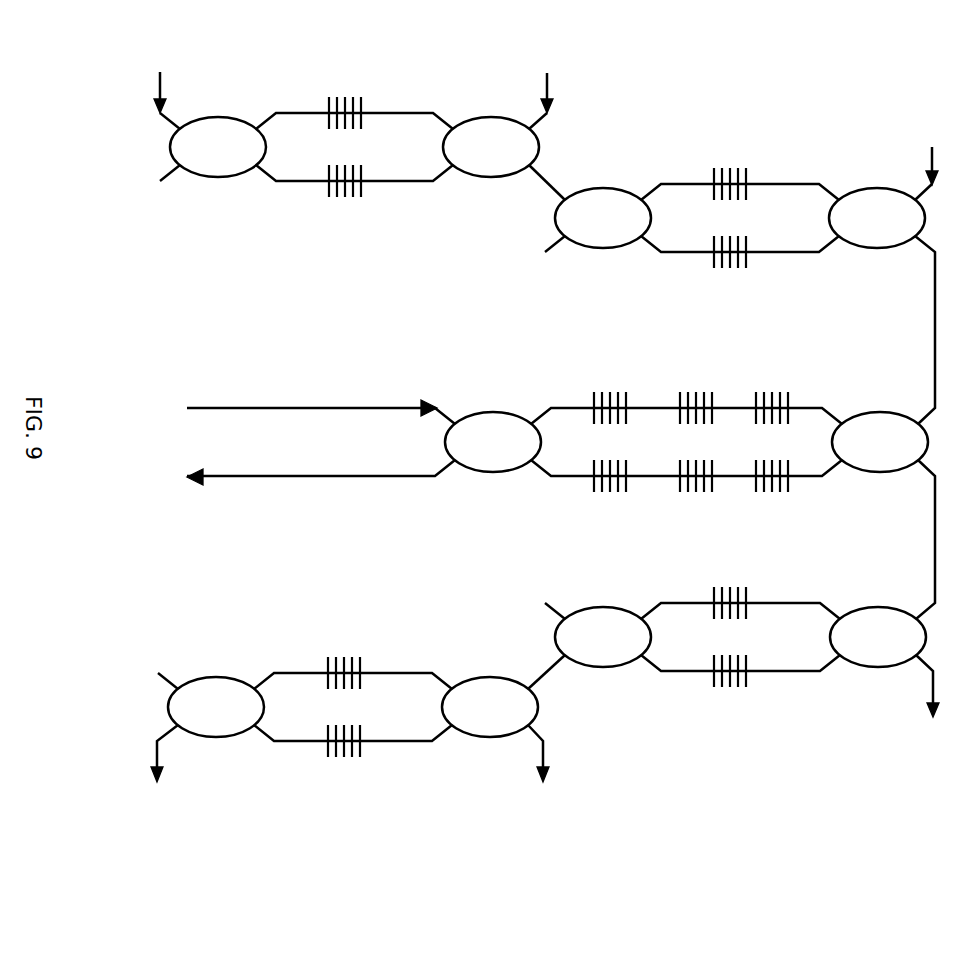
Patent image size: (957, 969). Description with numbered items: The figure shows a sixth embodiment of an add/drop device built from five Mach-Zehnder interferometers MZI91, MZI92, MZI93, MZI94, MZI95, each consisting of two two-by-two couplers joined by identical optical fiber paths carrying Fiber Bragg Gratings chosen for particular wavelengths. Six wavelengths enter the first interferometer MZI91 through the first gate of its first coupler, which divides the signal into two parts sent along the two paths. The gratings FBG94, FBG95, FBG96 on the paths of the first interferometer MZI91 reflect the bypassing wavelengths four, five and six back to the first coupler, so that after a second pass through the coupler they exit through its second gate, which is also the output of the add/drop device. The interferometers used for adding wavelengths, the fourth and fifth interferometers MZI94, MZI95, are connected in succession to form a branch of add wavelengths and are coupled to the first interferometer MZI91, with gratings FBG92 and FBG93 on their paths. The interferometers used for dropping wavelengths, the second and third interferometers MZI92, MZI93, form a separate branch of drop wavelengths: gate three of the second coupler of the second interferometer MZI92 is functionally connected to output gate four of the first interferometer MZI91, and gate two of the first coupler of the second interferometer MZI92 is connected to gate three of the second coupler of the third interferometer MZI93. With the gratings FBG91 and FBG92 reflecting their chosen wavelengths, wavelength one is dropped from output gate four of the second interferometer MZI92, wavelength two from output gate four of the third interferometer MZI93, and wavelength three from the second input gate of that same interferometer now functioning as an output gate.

The first interferometer MZI91 is at (565, 386).
The second interferometer MZI92 is at (418, 758).
The third interferometer MZI93 is at (818, 720).
The fourth interferometer MZI94 is at (822, 153).
The fifth interferometer MZI95 is at (409, 105).
The Fiber Bragg Grating FBG91 is at (732, 637).
The Fiber Bragg Grating FBG92 is at (353, 427).
The Fiber Bragg Grating FBG93 is at (738, 218).
The Fiber Bragg Grating FBG94 is at (601, 442).
The Fiber Bragg Grating FBG95 is at (707, 445).
The Fiber Bragg Grating FBG96 is at (777, 442).